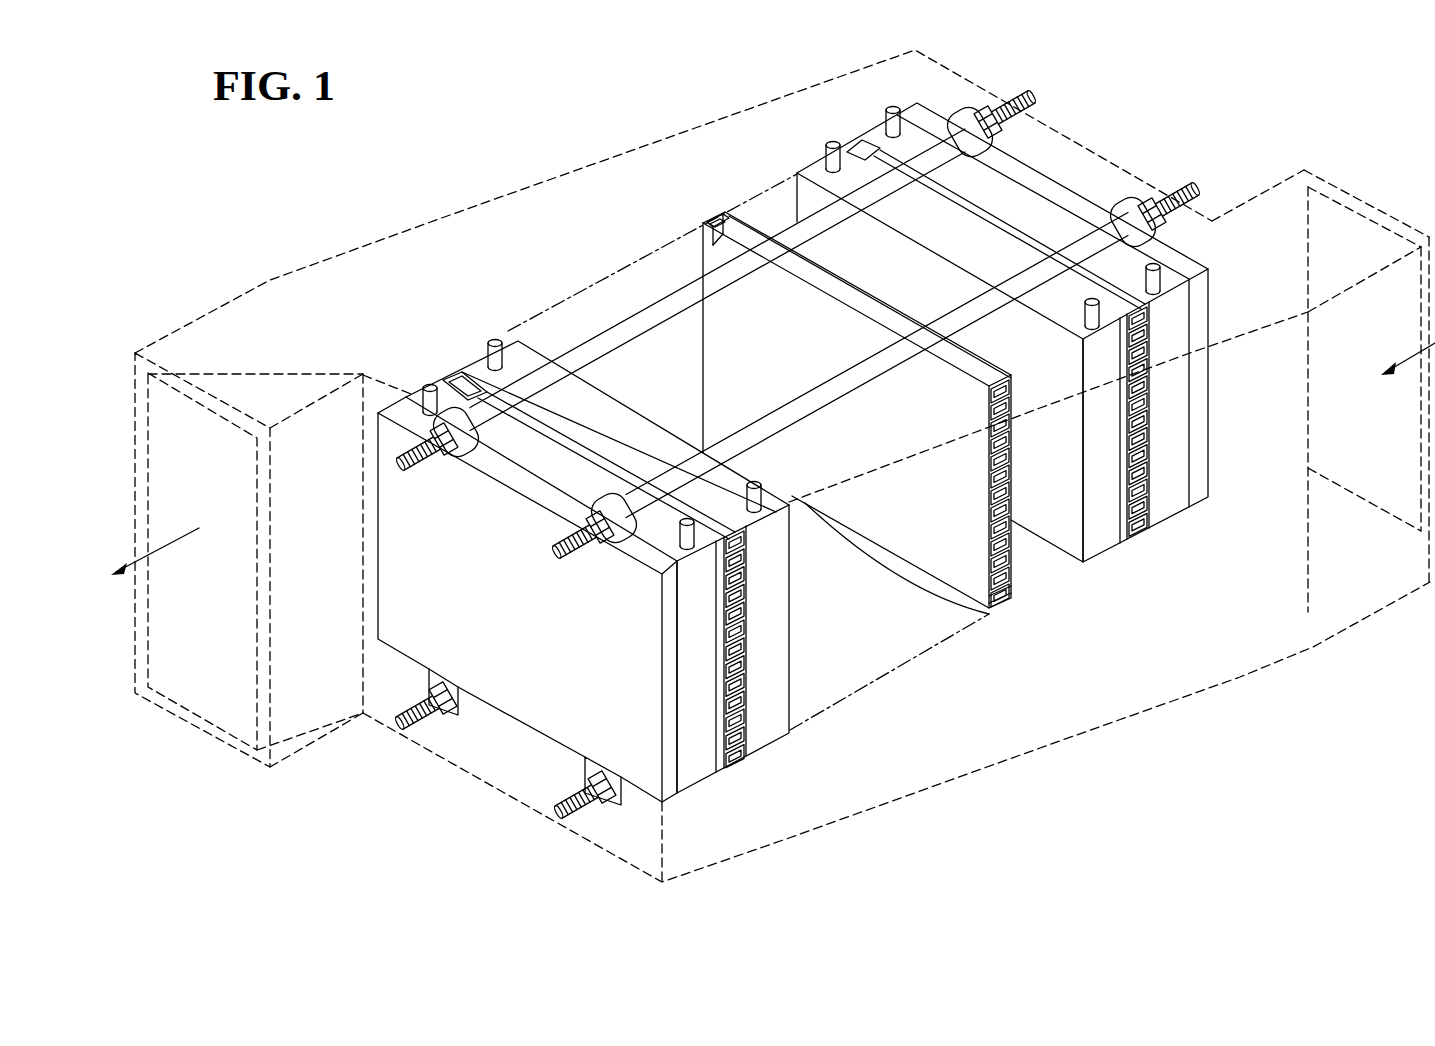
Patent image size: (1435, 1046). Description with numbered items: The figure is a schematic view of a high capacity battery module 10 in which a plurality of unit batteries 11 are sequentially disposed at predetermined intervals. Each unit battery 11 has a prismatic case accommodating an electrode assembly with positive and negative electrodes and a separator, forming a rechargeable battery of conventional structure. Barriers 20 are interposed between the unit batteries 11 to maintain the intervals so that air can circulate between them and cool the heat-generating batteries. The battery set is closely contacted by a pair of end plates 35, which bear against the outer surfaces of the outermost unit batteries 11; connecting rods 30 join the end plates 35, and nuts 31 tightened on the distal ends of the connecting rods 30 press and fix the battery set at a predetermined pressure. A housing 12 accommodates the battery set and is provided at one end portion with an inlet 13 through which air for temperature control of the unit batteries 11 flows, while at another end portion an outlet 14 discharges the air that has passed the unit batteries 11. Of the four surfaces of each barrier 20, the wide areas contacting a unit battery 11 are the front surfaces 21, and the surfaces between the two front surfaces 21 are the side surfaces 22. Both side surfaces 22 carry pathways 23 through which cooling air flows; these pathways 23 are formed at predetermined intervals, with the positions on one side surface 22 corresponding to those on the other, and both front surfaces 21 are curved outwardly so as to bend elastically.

The battery module 10 is at (1136, 75).
The unit battery 11 is at (702, 765).
The housing 12 is at (492, 212).
The inlet 13 is at (1360, 239).
The outlet 14 is at (206, 707).
The barrier 20 is at (745, 771).
The front surface 21 is at (765, 227).
The side surface 22 is at (717, 212).
The pathway 23 is at (707, 220).
The connecting rod 30 is at (678, 287).
The nut 31 is at (430, 428).
The end plate 35 is at (671, 798).